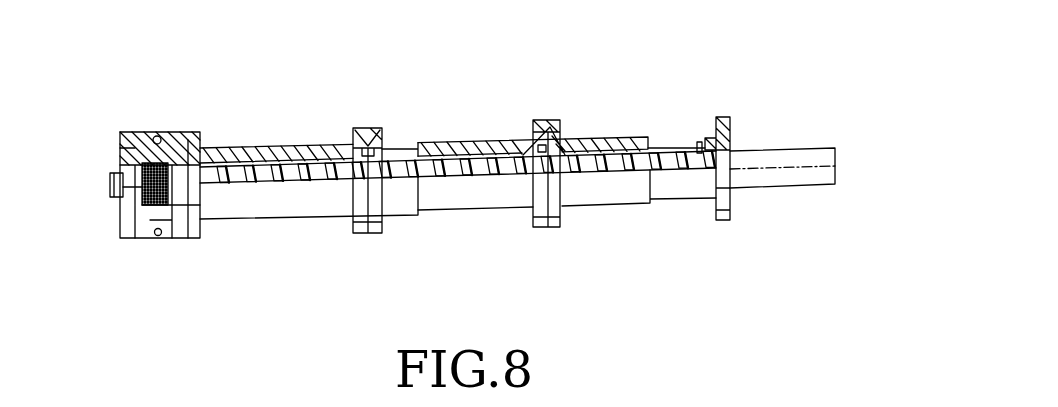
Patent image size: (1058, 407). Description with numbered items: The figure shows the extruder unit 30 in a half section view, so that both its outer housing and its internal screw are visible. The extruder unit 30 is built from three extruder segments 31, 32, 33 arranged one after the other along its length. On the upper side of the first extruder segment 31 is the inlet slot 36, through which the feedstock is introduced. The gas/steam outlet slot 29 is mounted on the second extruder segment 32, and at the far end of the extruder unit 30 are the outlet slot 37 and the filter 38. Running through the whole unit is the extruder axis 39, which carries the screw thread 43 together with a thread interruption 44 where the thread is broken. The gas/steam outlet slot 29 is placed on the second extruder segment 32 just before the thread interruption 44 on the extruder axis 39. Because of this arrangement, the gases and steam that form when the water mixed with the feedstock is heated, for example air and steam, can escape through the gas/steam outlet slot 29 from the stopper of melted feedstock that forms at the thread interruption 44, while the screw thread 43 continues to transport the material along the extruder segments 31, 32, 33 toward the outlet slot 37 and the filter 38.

The gas/steam outlet slot 29 is at (398, 149).
The extruder unit 30 is at (508, 140).
The first extruder segment 31 is at (610, 205).
The second extruder segment 32 is at (480, 208).
The extruder segment 33 is at (263, 217).
The inlet slot 36 is at (686, 147).
The outlet slot 37 is at (117, 196).
The filter 38 is at (153, 212).
The extruder axis 39 is at (787, 149).
The screw thread 43 is at (290, 146).
The thread interruption 44 is at (437, 152).